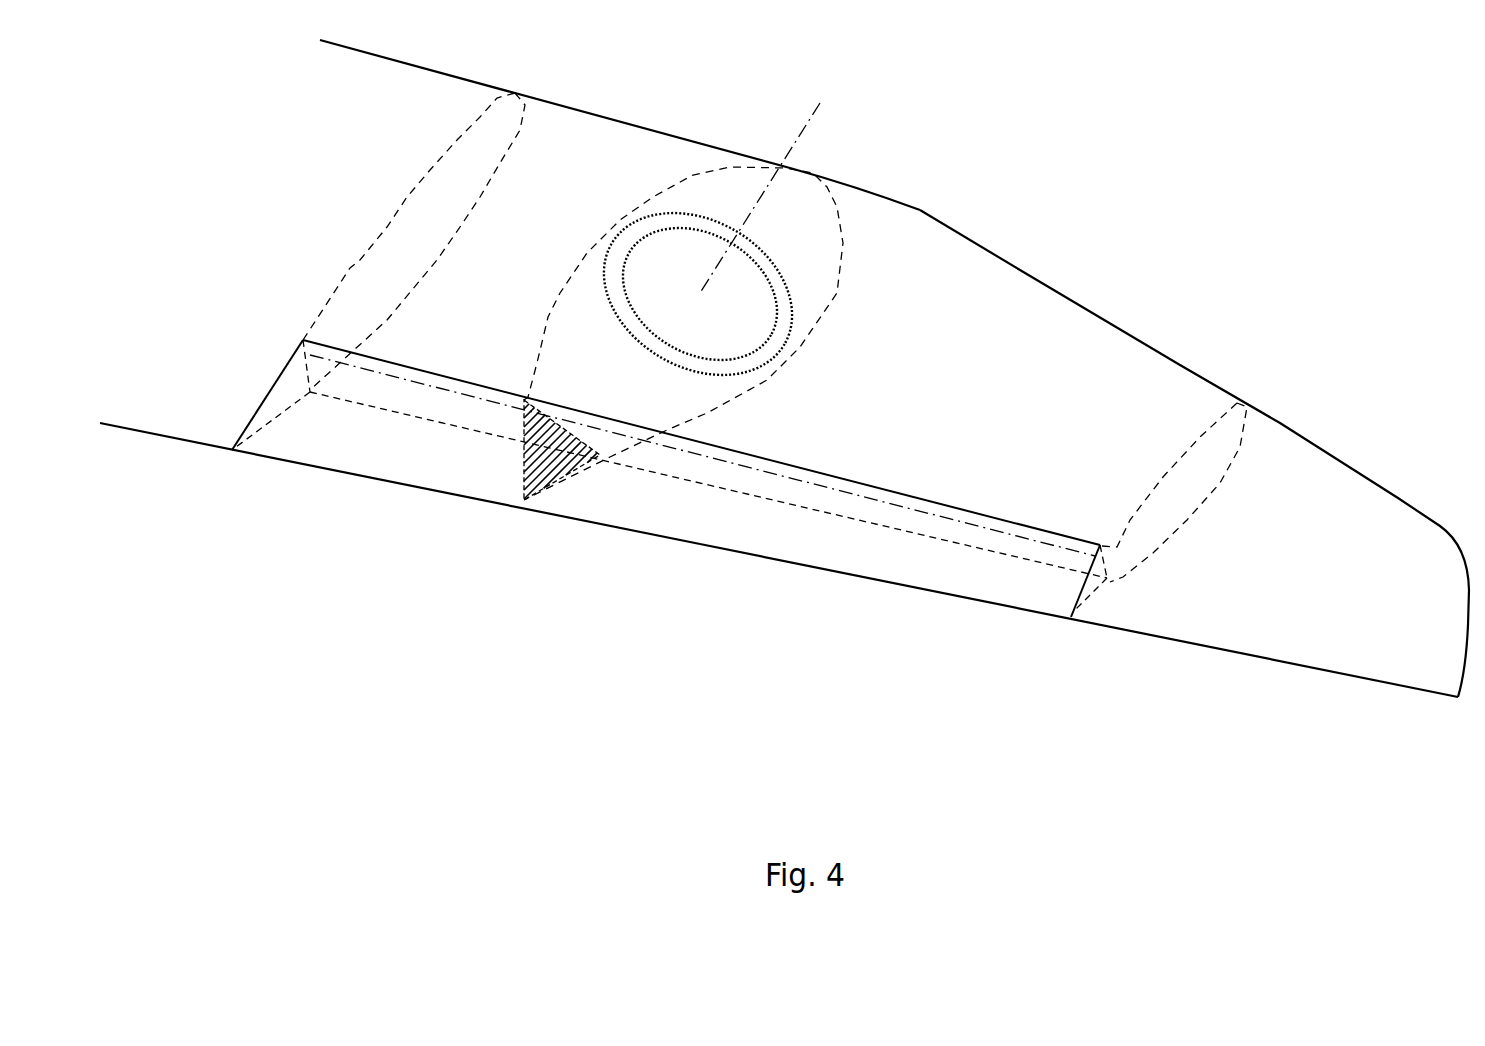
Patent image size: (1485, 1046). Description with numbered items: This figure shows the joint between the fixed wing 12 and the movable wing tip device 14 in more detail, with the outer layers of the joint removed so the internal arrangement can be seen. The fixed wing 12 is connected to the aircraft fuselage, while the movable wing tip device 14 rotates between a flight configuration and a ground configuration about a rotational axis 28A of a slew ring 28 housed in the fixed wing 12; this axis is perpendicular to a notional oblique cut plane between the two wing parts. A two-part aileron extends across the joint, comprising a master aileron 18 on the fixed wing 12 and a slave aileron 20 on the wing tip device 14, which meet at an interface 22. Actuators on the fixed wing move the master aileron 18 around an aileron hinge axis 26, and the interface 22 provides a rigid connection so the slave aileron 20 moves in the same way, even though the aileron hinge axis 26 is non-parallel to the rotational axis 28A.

The fixed wing 12 is at (556, 152).
The movable wing tip device 14 is at (1048, 365).
The master aileron 18 is at (358, 450).
The slave aileron 20 is at (720, 523).
The interface 22 is at (543, 467).
The aileron hinge axis 26 is at (873, 500).
The slew ring 28 is at (693, 223).
The rotational axis 28A is at (800, 129).